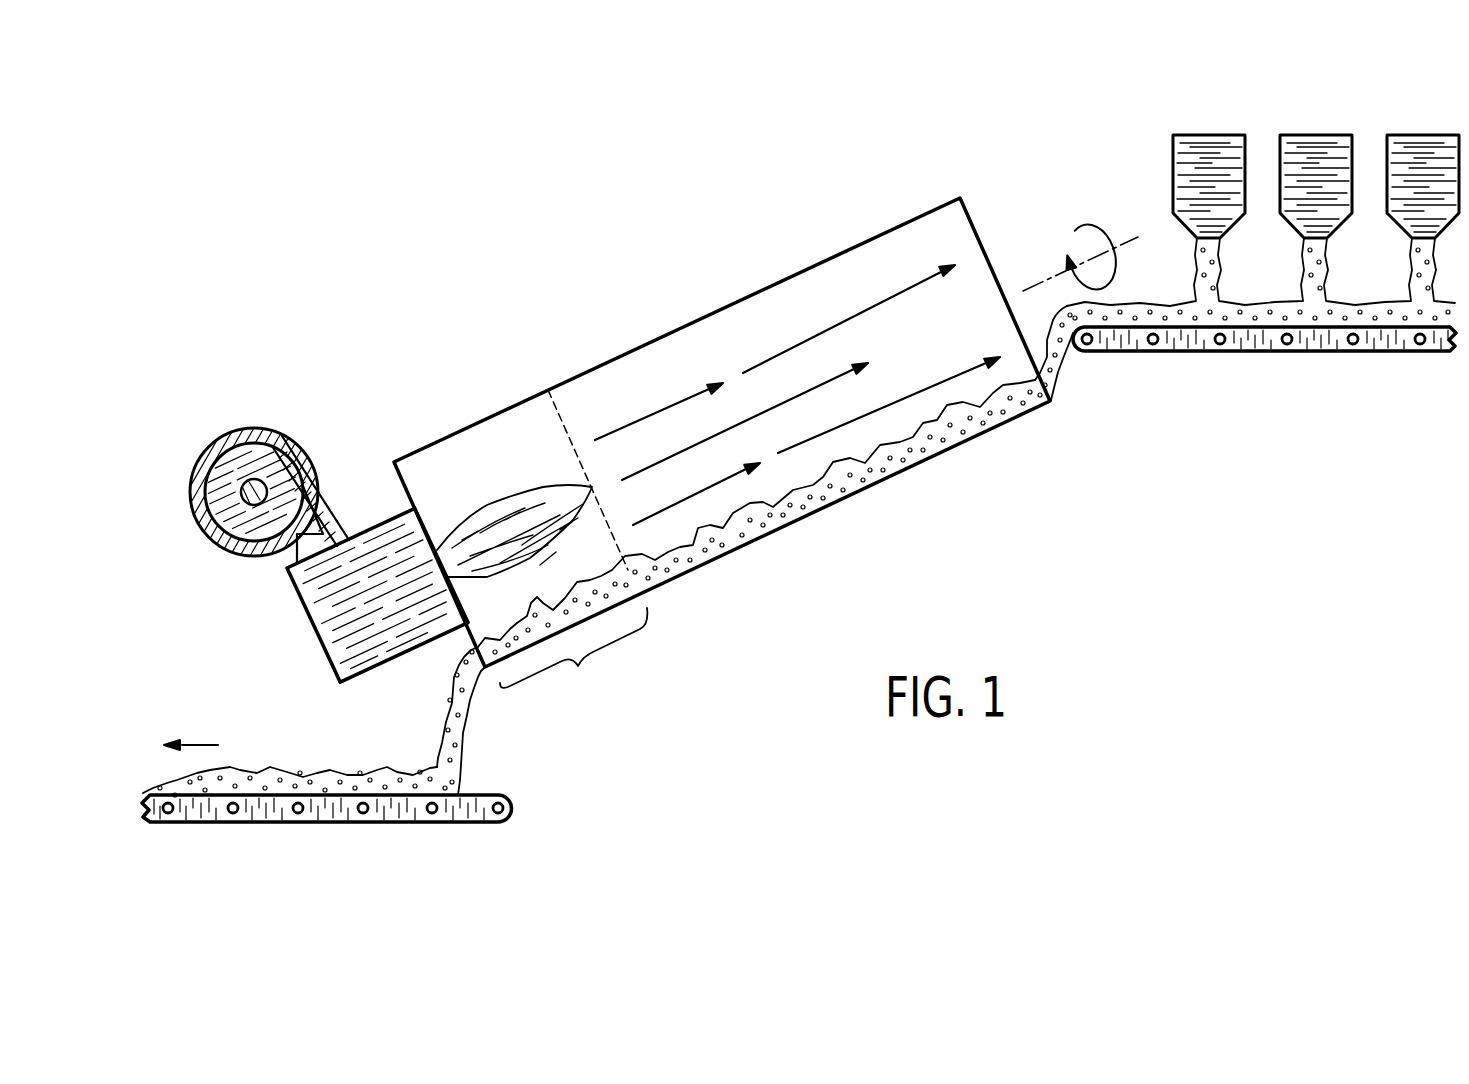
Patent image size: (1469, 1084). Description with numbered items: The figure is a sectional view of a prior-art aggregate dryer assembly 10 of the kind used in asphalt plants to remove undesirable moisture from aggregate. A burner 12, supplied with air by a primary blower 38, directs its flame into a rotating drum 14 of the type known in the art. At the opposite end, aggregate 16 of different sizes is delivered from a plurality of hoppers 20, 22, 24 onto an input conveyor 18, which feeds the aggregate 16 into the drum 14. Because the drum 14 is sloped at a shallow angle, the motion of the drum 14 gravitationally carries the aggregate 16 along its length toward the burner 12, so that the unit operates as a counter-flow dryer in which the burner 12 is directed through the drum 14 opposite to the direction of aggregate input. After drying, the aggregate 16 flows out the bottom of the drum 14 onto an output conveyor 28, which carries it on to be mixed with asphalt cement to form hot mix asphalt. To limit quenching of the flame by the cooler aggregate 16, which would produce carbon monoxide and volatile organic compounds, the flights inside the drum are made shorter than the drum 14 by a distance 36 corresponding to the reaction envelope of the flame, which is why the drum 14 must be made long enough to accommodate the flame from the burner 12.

The dryer assembly 10 is at (492, 290).
The burner 12 is at (388, 660).
The rotating drum 14 is at (786, 278).
The aggregate 16 is at (966, 421).
The input conveyor 18 is at (1264, 352).
The hopper 20 is at (1200, 135).
The hopper 22 is at (1308, 135).
The hopper 24 is at (1415, 135).
The output conveyor 28 is at (330, 822).
The distance 36 is at (573, 657).
The primary blower 38 is at (243, 523).